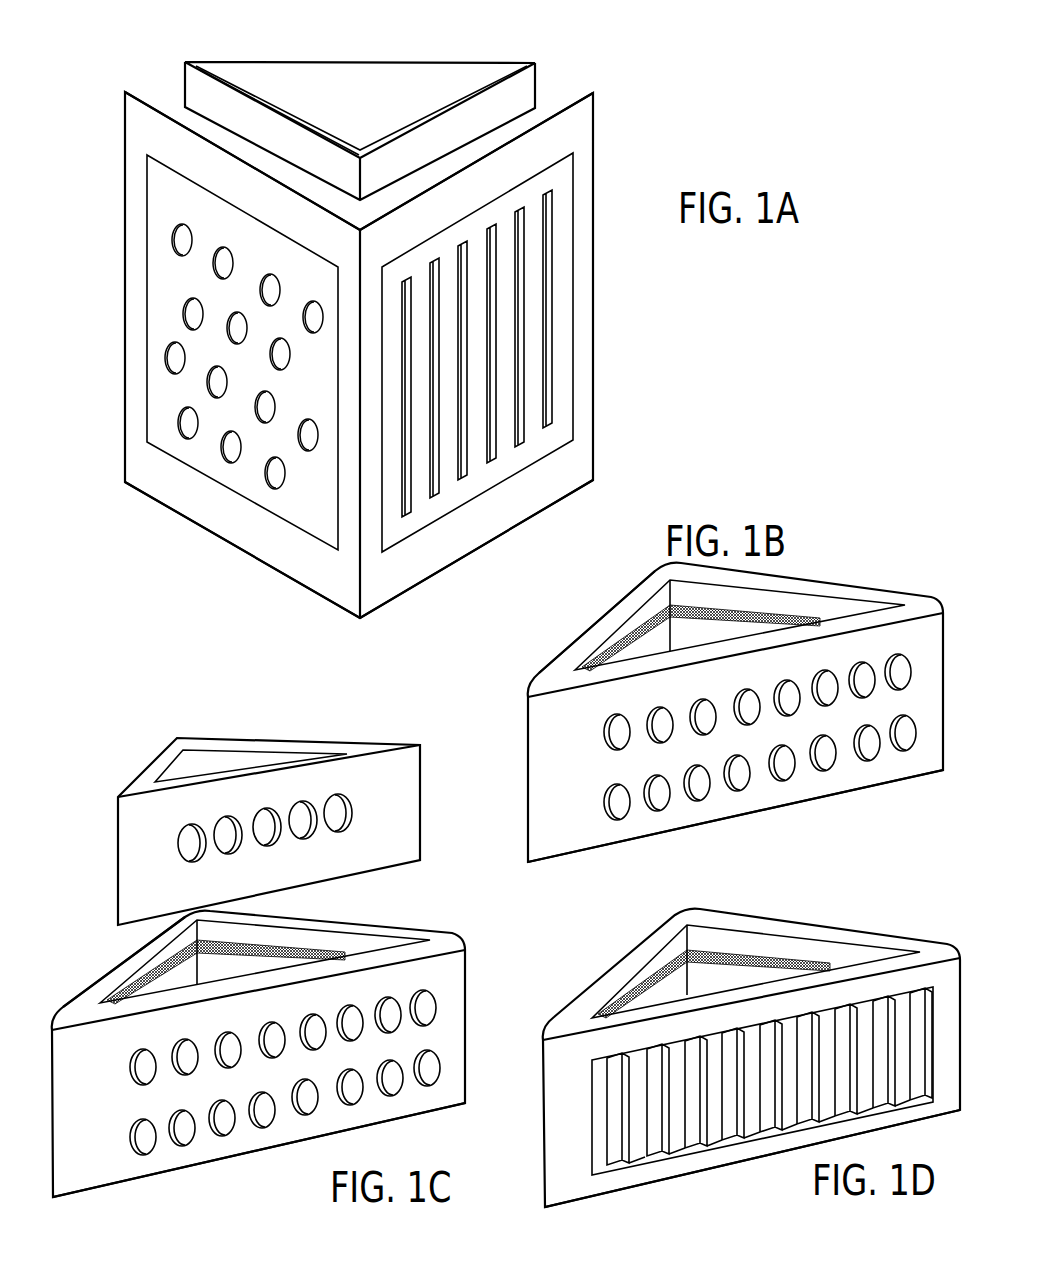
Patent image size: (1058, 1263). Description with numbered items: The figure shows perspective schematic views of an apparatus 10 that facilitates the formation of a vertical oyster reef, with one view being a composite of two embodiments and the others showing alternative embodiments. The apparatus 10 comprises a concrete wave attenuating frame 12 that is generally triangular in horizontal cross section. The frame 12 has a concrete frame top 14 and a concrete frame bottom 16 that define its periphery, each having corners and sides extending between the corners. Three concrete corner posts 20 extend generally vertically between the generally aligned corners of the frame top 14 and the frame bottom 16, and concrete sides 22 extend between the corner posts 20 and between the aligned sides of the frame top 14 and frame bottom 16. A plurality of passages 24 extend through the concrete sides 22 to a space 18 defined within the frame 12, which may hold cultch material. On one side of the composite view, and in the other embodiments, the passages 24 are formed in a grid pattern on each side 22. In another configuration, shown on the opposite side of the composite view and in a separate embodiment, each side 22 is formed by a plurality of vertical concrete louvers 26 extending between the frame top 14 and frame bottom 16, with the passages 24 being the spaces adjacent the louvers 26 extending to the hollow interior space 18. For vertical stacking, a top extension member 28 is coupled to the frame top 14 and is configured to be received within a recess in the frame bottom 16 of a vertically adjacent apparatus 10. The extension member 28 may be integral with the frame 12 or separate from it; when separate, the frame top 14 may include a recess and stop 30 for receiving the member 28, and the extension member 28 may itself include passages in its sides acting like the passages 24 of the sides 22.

In FIG. 1A, the apparatus 10 is at (640, 105).
In FIG. 1C, the apparatus 10 is at (95, 897).
In FIG. 1A, the concrete wave attenuating frame 12 is at (597, 310).
In FIG. 1B, the concrete wave attenuating frame 12 is at (530, 786).
In FIG. 1C, the concrete wave attenuating frame 12 is at (470, 1015).
In FIG. 1D, the concrete wave attenuating frame 12 is at (545, 1172).
In FIG. 1A, the concrete frame top 14 is at (505, 175).
In FIG. 1B, the concrete frame top 14 is at (597, 622).
In FIG. 1C, the concrete frame top 14 is at (420, 975).
In FIG. 1A, the concrete frame bottom 16 is at (462, 537).
In FIG. 1B, the concrete frame bottom 16 is at (772, 800).
In FIG. 1C, the concrete frame bottom 16 is at (335, 1120).
In FIG. 1D, the concrete frame bottom 16 is at (700, 1163).
In FIG. 1B, the space 18 is at (690, 632).
In FIG. 1C, the space 18 is at (215, 975).
In FIG. 1D, the space 18 is at (710, 978).
In FIG. 1A, the concrete corner posts 20 is at (593, 395).
In FIG. 1B, the concrete corner posts 20 is at (935, 645).
In FIG. 1C, the concrete corner posts 20 is at (460, 1062).
In FIG. 1D, the concrete corner posts 20 is at (562, 1120).
In FIG. 1A, the concrete sides 22 is at (147, 157).
In FIG. 1A, the passages 24 is at (552, 228).
In FIG. 1B, the passages 24 is at (872, 752).
In FIG. 1C, the passages 24 is at (215, 1140).
In FIG. 1A, the vertical concrete louvers 26 is at (538, 432).
In FIG. 1D, the vertical concrete louvers 26 is at (762, 1081).
In FIG. 1A, the top extension member 28 is at (342, 62).
In FIG. 1C, the top extension member 28 is at (333, 740).
In FIG. 1B, the recess and stop 30 is at (830, 604).
In FIG. 1C, the recess and stop 30 is at (355, 940).
In FIG. 1D, the recess and stop 30 is at (810, 950).